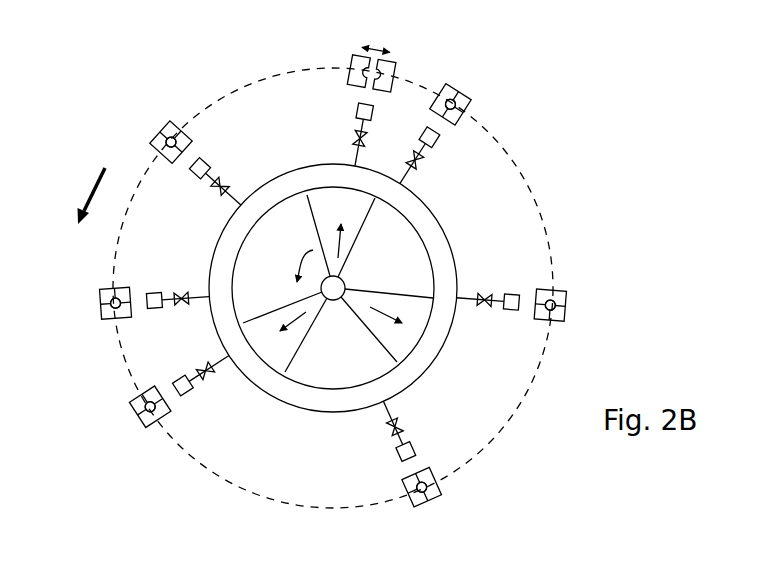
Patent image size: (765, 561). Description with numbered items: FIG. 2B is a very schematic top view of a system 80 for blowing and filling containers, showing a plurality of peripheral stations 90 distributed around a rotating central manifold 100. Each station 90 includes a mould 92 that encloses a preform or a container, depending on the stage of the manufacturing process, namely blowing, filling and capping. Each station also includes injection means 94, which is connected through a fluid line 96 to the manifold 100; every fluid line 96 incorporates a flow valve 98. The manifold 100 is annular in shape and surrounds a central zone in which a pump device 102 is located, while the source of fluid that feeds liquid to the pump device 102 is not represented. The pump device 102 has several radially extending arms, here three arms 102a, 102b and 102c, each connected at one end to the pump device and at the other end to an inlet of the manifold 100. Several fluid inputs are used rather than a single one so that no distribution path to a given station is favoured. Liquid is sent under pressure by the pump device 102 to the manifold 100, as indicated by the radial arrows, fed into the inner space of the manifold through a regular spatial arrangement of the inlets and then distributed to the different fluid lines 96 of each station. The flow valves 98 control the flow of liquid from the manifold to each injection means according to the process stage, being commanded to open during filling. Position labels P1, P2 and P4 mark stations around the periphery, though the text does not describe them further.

The system 80 is at (570, 150).
The station 90 is at (386, 60).
The mould 92 is at (400, 80).
The injection means 94 is at (357, 110).
The fluid line 96 is at (355, 158).
The flow valve 98 is at (353, 138).
The rotating central manifold 100 is at (455, 240).
The pump device 102 is at (352, 277).
The radially extending arm 102a is at (255, 318).
The radially extending arm 102b is at (313, 228).
The radially extending arm 102c is at (363, 330).
The first position P1 is at (140, 152).
The second position P2 is at (105, 325).
The fourth position P4 is at (485, 105).